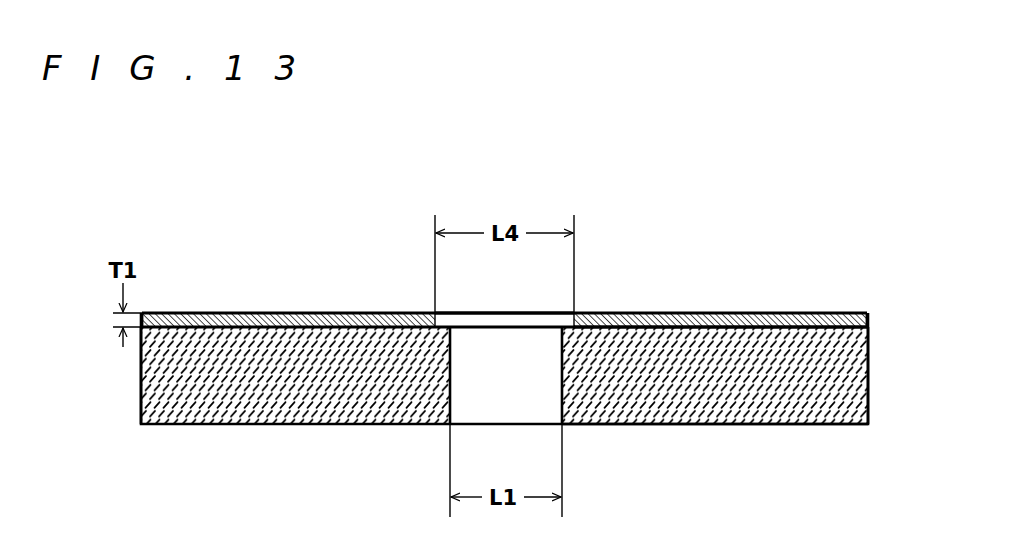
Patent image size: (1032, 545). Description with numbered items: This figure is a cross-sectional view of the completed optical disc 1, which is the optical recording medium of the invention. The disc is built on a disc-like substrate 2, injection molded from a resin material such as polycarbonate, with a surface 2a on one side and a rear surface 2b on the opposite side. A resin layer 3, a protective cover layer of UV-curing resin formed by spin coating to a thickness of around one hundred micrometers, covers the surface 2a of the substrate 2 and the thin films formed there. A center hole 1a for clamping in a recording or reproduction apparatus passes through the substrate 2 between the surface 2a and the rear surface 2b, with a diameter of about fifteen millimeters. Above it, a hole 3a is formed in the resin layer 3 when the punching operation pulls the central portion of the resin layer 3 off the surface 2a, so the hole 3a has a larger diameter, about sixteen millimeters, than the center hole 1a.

The optical disc 1 is at (341, 220).
The center hole 1a is at (497, 404).
The substrate 2 is at (853, 378).
The surface of substrate 2a is at (760, 323).
The rear surface of substrate 2b is at (760, 427).
The resin layer 3 is at (868, 320).
The hole in resin layer 3a is at (498, 325).